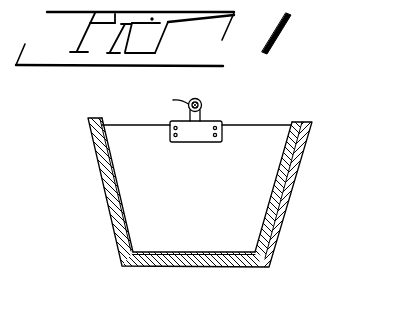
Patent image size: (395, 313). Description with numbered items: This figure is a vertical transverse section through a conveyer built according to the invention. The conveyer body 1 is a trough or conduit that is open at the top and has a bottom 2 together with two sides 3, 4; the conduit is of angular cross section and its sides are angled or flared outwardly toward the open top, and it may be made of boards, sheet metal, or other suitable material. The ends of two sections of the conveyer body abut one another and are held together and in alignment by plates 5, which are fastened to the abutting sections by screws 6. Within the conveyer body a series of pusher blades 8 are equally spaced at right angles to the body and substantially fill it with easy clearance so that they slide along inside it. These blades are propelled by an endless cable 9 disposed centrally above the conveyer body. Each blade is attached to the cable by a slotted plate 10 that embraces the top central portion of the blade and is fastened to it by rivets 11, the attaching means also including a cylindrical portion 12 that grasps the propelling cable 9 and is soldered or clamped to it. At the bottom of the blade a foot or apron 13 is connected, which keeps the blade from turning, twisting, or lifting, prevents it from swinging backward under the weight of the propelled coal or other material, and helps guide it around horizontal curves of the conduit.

The conveyer body 1 is at (88, 152).
The bottom 2 is at (183, 266).
The side 3 is at (112, 202).
The side 4 is at (273, 213).
The plate 5 is at (300, 163).
The screw 6 is at (298, 138).
The blade 8 is at (143, 222).
The endless cable 9 is at (174, 99).
The slotted plate 10 is at (198, 142).
The rivet 11 is at (172, 129).
The cylindrical portion 12 is at (201, 101).
The foot or apron 13 is at (193, 252).